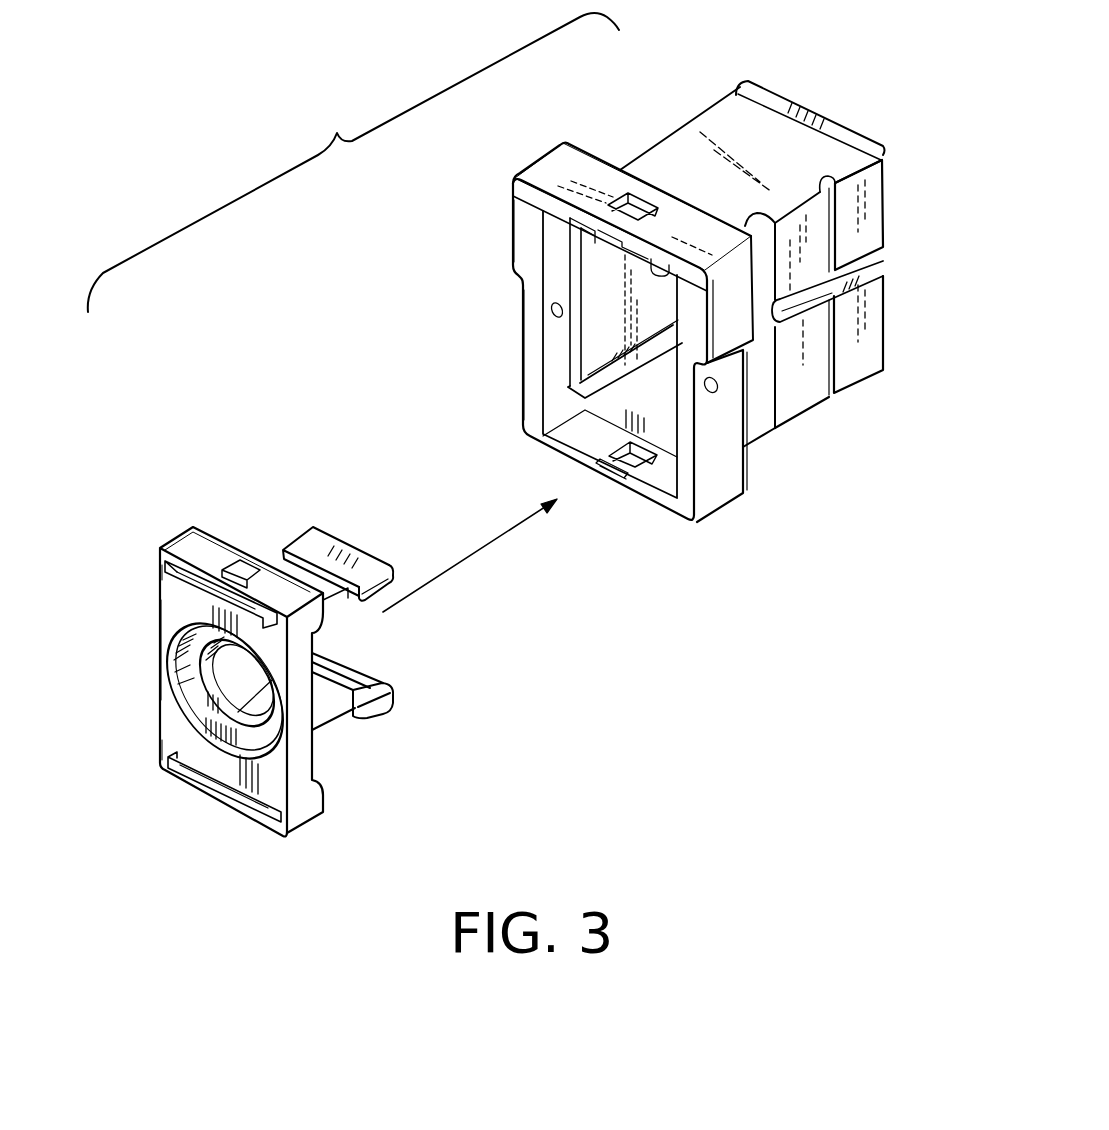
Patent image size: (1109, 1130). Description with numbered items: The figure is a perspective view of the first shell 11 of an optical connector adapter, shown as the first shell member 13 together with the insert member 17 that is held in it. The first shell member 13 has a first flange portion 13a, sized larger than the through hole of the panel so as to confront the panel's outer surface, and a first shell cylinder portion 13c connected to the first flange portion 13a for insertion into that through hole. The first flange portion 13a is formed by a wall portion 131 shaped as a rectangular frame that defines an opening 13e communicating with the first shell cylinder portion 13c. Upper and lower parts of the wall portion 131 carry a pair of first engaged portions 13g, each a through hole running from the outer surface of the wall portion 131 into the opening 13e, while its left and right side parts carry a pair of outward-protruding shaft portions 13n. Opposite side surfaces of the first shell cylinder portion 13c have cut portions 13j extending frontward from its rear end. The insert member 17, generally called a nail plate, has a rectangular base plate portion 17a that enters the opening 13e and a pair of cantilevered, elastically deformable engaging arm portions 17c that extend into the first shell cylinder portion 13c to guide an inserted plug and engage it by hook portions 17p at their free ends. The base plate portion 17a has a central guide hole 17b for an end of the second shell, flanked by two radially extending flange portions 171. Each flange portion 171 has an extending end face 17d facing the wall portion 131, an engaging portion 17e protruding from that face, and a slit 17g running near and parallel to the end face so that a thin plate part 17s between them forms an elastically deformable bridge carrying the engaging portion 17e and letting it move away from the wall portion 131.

The first shell 11 is at (353, 162).
The first shell member 13 is at (710, 92).
The first flange portion 13a is at (541, 153).
The wall portion 131 is at (533, 258).
The opening 13e is at (548, 268).
The first engaged portion 13g is at (643, 200).
The shaft portion 13n is at (717, 393).
The first shell cylinder portion 13c is at (807, 383).
The cut portion 13j is at (868, 256).
The insert member 17 is at (108, 493).
The base plate portion 17a is at (172, 616).
The guide hole 17b is at (205, 665).
The engaging arm portion 17c is at (327, 580).
The extending end face 17d is at (183, 543).
The engaging portion 17e is at (240, 563).
The slit 17g is at (198, 585).
The hook portion 17p is at (375, 570).
The plate part 17s is at (222, 596).
The flange portion 171 is at (168, 580).